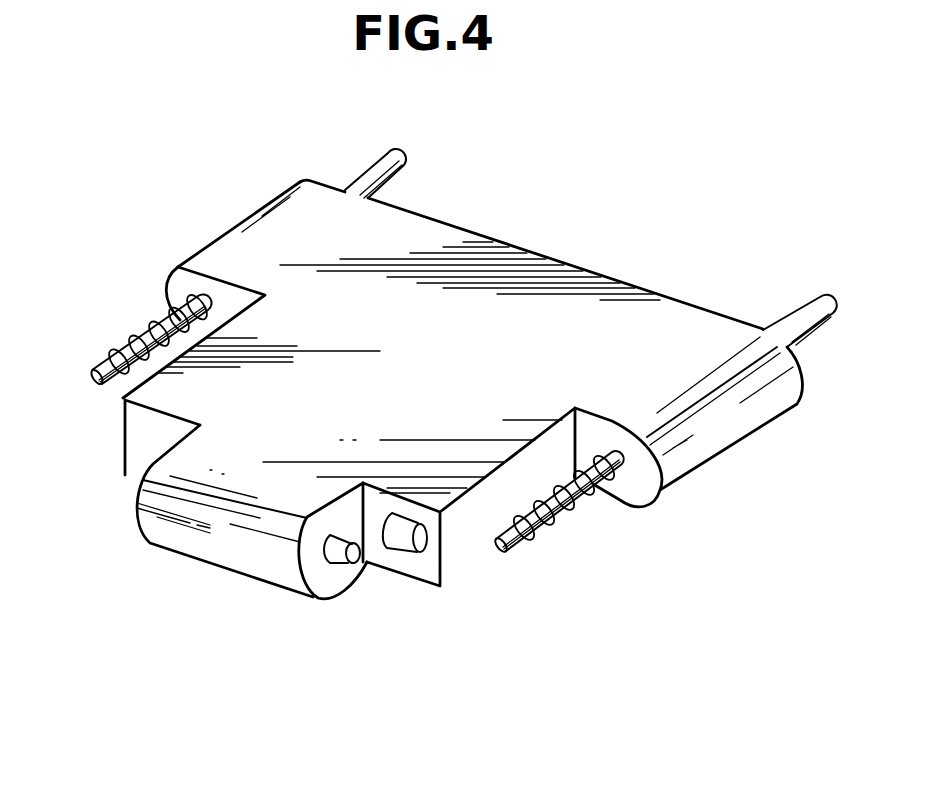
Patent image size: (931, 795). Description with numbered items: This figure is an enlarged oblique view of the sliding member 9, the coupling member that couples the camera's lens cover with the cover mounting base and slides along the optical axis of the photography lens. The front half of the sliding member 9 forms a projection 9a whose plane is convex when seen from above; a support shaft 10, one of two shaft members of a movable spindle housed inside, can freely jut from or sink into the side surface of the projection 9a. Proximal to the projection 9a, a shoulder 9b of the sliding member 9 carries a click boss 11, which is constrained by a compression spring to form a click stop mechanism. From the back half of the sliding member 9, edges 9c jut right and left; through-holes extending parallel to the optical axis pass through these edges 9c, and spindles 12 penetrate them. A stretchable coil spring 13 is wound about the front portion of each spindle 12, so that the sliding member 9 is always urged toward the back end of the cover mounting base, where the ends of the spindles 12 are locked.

The sliding member 9 is at (586, 270).
The projection 9a is at (235, 547).
The shoulder 9b is at (386, 553).
The edges 9c is at (250, 232).
The support shafts 10 is at (336, 566).
The click boss 11 is at (406, 555).
The spindles 12 is at (374, 172).
The coil spring 13 is at (132, 330).